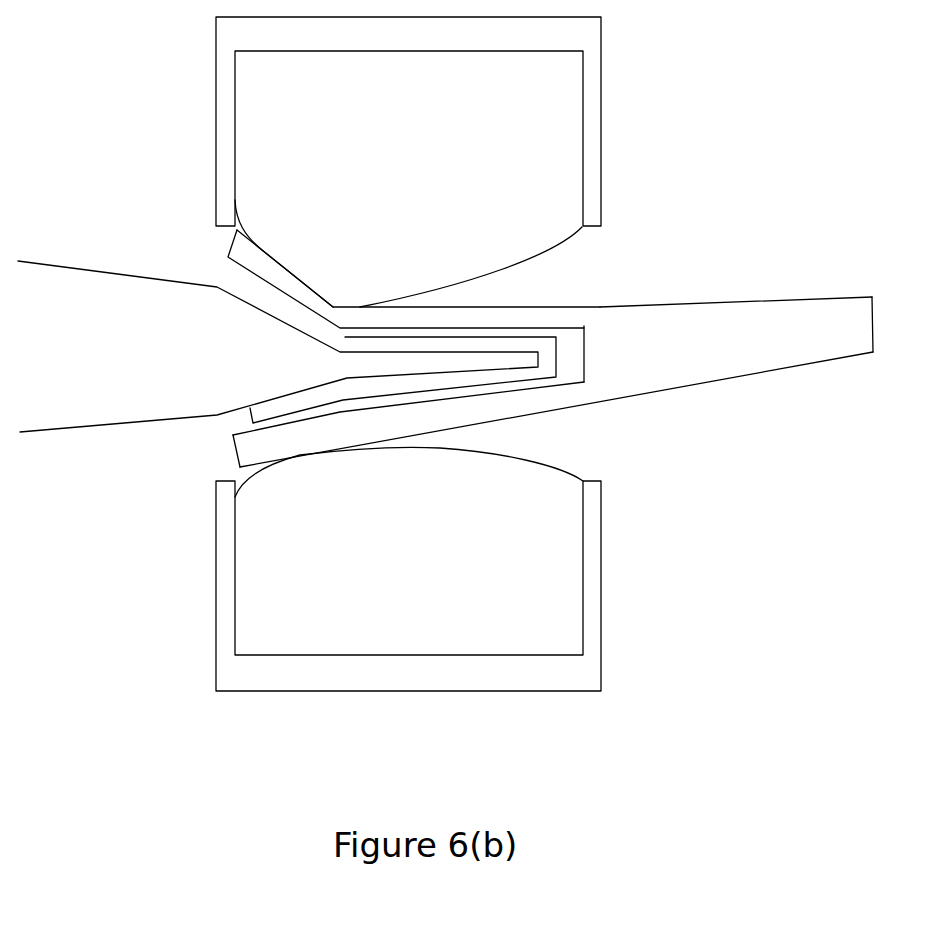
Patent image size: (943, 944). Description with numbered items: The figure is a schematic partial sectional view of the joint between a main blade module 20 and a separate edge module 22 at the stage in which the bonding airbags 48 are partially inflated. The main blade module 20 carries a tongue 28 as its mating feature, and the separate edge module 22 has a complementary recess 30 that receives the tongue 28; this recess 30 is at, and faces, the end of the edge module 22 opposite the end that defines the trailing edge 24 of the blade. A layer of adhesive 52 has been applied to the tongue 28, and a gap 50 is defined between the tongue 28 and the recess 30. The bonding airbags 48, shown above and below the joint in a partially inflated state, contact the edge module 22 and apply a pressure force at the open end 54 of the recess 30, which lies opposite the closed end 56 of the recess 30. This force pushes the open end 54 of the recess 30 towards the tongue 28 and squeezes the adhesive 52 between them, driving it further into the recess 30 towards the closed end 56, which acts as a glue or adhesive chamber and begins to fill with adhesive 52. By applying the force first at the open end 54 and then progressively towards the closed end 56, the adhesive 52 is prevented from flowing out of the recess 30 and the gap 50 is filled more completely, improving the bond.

The main blade module 20 is at (60, 268).
The separate edge module 22 is at (768, 373).
The trailing edge 24 is at (870, 373).
The tongue 28 is at (533, 381).
The recess 30 is at (713, 409).
The closed end 56 is at (571, 358).
The bonding airbags 48 is at (578, 238).
The gap 50 is at (533, 381).
The adhesive 52 is at (547, 333).
The open end 54 is at (222, 452).